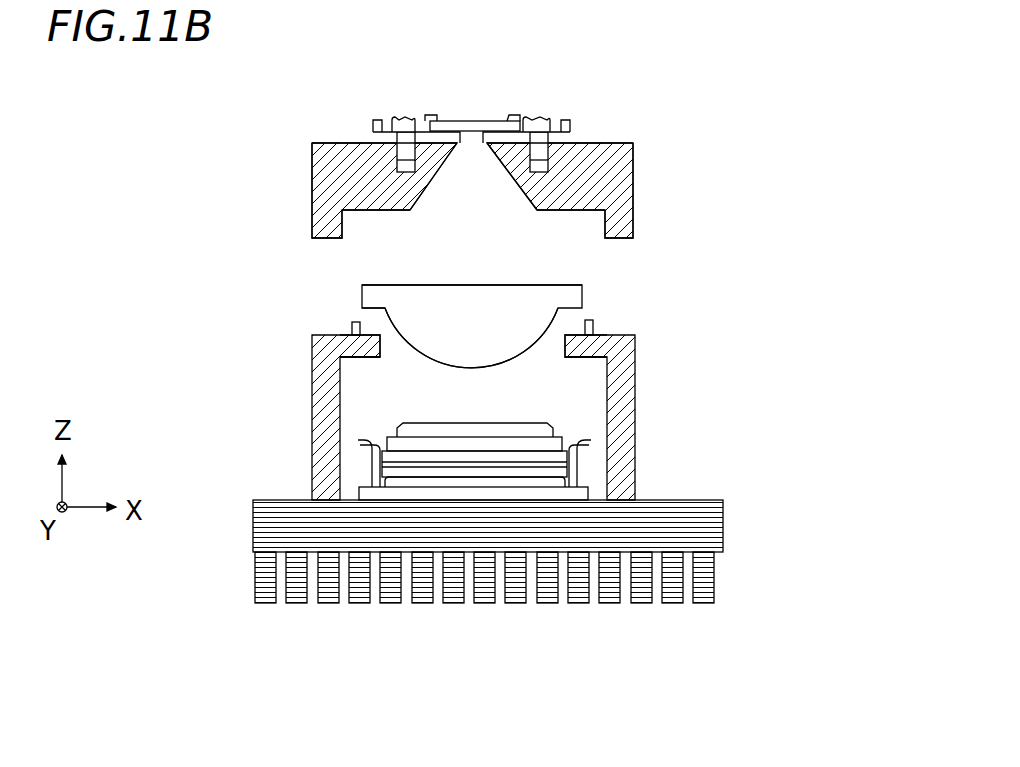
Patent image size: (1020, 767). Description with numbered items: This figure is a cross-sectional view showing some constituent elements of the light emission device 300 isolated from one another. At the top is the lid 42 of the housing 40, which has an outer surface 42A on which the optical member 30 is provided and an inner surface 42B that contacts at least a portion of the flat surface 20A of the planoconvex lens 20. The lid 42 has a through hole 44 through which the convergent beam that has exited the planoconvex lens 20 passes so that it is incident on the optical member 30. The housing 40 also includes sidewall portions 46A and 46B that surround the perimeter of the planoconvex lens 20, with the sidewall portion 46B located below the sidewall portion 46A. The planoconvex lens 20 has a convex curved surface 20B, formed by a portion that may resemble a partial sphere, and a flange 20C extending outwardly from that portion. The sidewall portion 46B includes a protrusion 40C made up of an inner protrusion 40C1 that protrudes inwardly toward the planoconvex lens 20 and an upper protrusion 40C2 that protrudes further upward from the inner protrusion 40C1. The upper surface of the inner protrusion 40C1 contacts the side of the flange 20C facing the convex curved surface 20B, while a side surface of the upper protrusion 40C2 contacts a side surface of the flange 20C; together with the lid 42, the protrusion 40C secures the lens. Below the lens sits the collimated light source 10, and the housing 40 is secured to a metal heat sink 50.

The light emission device 300 is at (774, 149).
The housing 40 is at (284, 214).
The lid 42 is at (355, 170).
The outer surface 42A is at (619, 140).
The inner surface 42B is at (564, 214).
The through hole 44 is at (517, 184).
The sidewall portion 46A is at (637, 233).
The sidewall portion 46B is at (636, 415).
The protrusion 40C is at (636, 337).
The inner protrusion 40C1 is at (585, 358).
The upper protrusion 40C2 is at (595, 330).
The optical member 30 is at (485, 122).
The planoconvex lens 20 is at (412, 292).
The flat surface 20A is at (428, 283).
The convex curved surface 20B is at (403, 339).
The flange 20C is at (373, 323).
The collimated light source 10 is at (463, 425).
The heat sink 50 is at (680, 500).